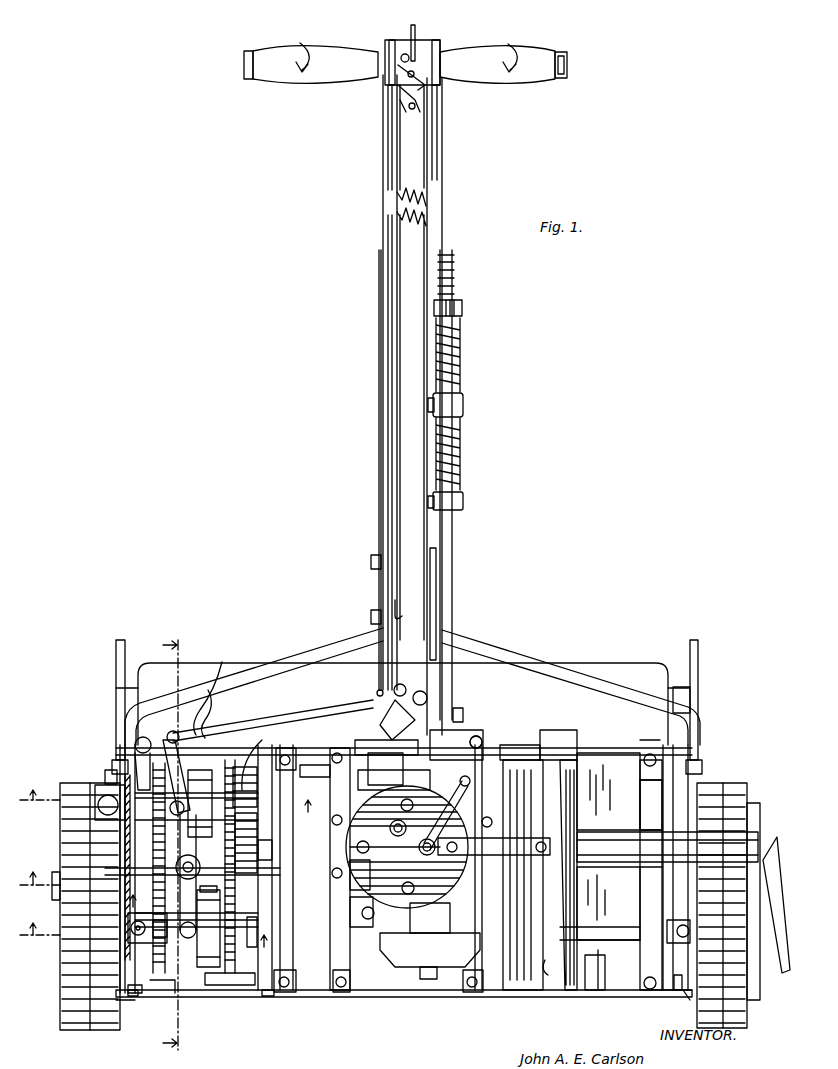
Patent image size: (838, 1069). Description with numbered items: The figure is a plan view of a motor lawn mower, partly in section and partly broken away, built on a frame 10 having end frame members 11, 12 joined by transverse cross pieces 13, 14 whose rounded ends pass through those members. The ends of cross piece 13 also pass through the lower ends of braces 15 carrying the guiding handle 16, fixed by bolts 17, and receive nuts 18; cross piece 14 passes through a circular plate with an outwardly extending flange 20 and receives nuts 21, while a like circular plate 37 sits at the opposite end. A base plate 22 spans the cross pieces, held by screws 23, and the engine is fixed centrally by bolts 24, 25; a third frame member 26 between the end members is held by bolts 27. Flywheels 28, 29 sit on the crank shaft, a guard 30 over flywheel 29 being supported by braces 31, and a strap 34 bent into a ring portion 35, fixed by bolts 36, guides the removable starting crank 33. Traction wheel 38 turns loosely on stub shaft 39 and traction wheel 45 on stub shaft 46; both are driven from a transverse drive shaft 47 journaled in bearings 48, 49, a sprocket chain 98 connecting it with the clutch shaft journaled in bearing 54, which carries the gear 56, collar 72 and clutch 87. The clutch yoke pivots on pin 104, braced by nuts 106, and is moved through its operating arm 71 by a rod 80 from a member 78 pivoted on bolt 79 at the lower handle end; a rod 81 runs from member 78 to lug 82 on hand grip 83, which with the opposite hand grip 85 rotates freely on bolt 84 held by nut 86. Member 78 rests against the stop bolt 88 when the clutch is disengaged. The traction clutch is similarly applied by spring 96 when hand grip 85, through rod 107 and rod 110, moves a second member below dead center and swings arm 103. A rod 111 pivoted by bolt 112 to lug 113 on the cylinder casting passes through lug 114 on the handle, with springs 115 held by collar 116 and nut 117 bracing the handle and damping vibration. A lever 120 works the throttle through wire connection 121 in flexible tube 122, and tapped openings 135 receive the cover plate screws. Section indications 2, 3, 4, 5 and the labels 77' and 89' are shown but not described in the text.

The frame 10 is at (500, 990).
The end frame member 11 is at (168, 992).
The end frame member 12 is at (677, 995).
The cross piece 13 is at (648, 740).
The cross piece 14 is at (663, 995).
The braces 15 is at (340, 655).
The guiding handle 16 is at (428, 236).
The bolts 17 is at (356, 625).
The nuts 18 is at (112, 762).
The flange 20 is at (120, 1003).
The nuts 21 is at (552, 968).
The base plate 22 is at (588, 990).
The screws 23 is at (268, 866).
The bolts 24 is at (340, 752).
The bolts 25 is at (487, 816).
The third frame member 26 is at (330, 840).
The bolts 27 is at (300, 748).
The flywheel 28 is at (360, 930).
The flywheel 29 is at (526, 745).
The guard 30 is at (568, 775).
The braces 31 is at (540, 838).
The starting crank 33 is at (790, 818).
The strap 34 is at (640, 902).
The ring or bearing portion 35 is at (648, 828).
The bolts 36 is at (644, 761).
The circular plate 37 is at (688, 1000).
The supporting traction wheel 38 is at (68, 977).
The stub shaft 39 is at (50, 893).
The supporting traction wheel 45 is at (745, 960).
The stub shaft 46 is at (768, 915).
The drive shaft 47 is at (605, 972).
The bearing 48 is at (150, 915).
The bearing 49 is at (132, 995).
The bearing 54 is at (96, 787).
The gear 56 is at (318, 772).
The operating arm 71 is at (192, 738).
The collar 72 is at (105, 778).
The pivot arm 77' is at (141, 749).
The member 78 is at (385, 712).
The bolt 79 is at (418, 676).
The rod 80 is at (330, 710).
The rod 81 is at (383, 368).
The lug 82 is at (388, 40).
The hand grip 83 is at (340, 92).
The bolt 84 is at (246, 64).
The hand grip 85 is at (540, 90).
The nut 86 is at (568, 62).
The clutch 87 is at (262, 740).
The bolt 88 is at (392, 694).
The bar 89' is at (230, 986).
The spring 96 is at (186, 938).
The sprocket chain 98 is at (350, 885).
The arm 103 is at (208, 692).
The pin 104 is at (240, 893).
The nuts 106 is at (140, 876).
The rod 107 is at (443, 162).
The rod 110 is at (224, 664).
The rod 111 is at (455, 580).
The bolt 112 is at (463, 712).
The lug 113 is at (438, 732).
The lug 114 is at (463, 405).
The springs 115 is at (461, 352).
The collar 116 is at (463, 500).
The nut 117 is at (466, 300).
The lever 120 is at (416, 28).
The wire connection 121 is at (405, 620).
The flexible tube 122 is at (380, 454).
The tapped openings 135 is at (332, 821).
The section line 2 is at (176, 844).
The section line 3 is at (78, 889).
The section line 4 is at (165, 794).
The section line 5 is at (145, 943).